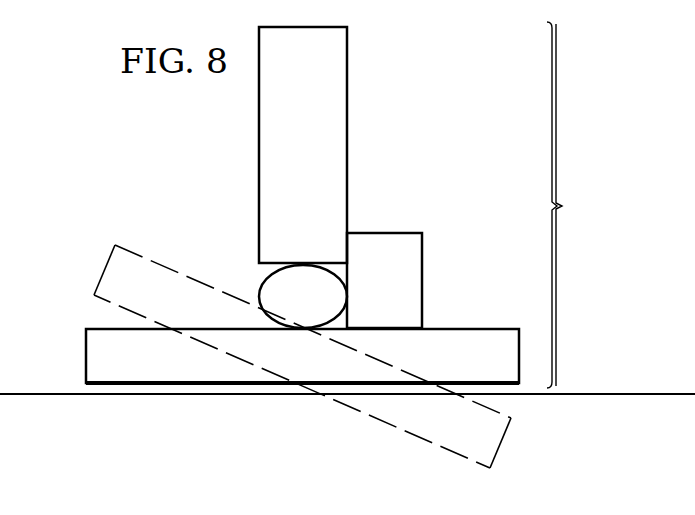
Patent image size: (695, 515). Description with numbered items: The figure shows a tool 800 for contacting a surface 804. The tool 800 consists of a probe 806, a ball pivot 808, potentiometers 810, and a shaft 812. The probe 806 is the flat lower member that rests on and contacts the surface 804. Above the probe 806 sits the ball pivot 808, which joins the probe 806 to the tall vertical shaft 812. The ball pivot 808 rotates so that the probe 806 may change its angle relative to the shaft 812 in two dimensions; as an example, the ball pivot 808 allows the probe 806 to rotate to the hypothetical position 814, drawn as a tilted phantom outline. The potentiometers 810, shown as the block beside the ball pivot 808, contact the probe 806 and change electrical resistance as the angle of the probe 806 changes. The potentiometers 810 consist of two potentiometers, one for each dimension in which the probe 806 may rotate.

The tool 800 is at (578, 205).
The surface 804 is at (625, 393).
The probe 806 is at (86, 358).
The ball pivot 808 is at (302, 277).
The potentiometers 810 is at (422, 273).
The shaft 812 is at (347, 113).
The hypothetical position 814 is at (105, 269).